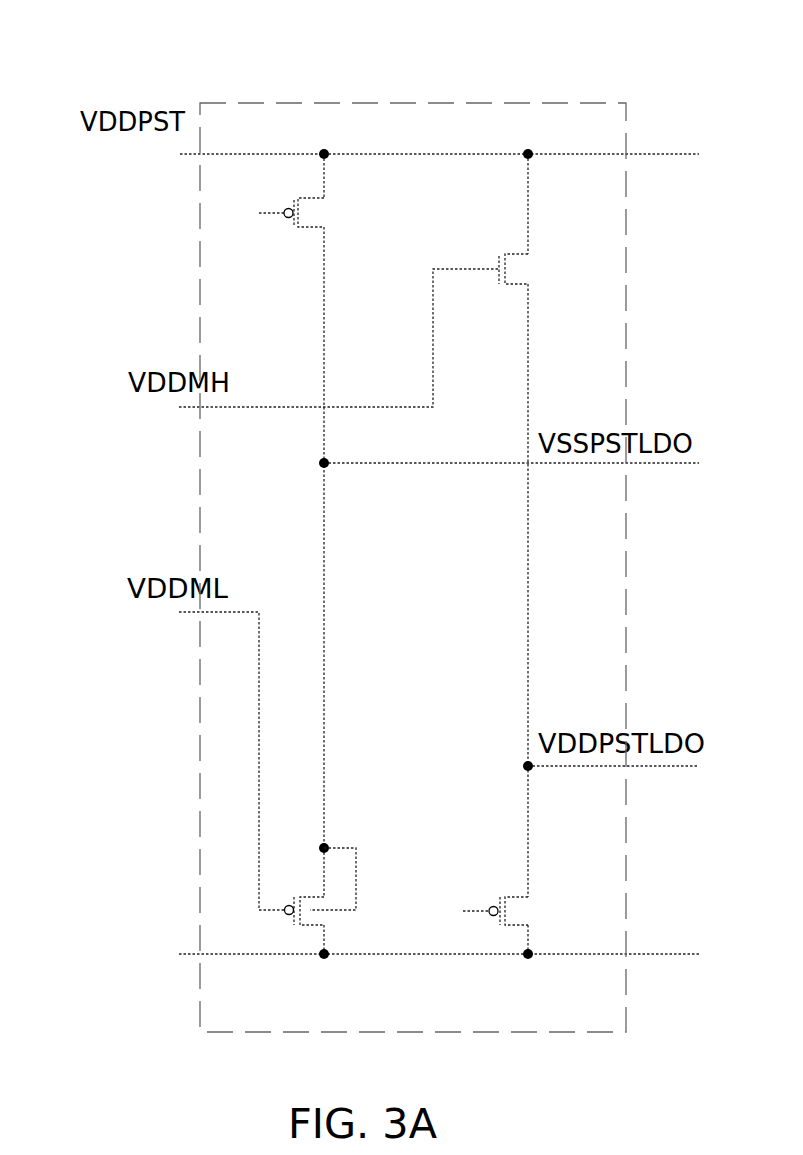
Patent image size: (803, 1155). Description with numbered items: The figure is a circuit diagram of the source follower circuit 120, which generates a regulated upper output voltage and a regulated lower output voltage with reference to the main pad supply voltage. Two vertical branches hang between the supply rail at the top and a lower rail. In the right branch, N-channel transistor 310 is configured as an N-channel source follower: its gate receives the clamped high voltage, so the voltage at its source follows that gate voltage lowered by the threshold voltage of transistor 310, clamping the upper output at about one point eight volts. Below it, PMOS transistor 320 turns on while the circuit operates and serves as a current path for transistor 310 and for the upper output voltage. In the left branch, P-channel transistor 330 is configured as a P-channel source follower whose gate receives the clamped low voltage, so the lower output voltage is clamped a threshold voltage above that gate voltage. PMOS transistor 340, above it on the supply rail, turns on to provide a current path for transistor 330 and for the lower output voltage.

The source follower circuit 120 is at (58, 35).
The N-channel transistor 310 is at (535, 269).
The PMOS transistor 320 is at (519, 909).
The P-channel transistor 330 is at (338, 867).
The PMOS transistor 340 is at (313, 211).